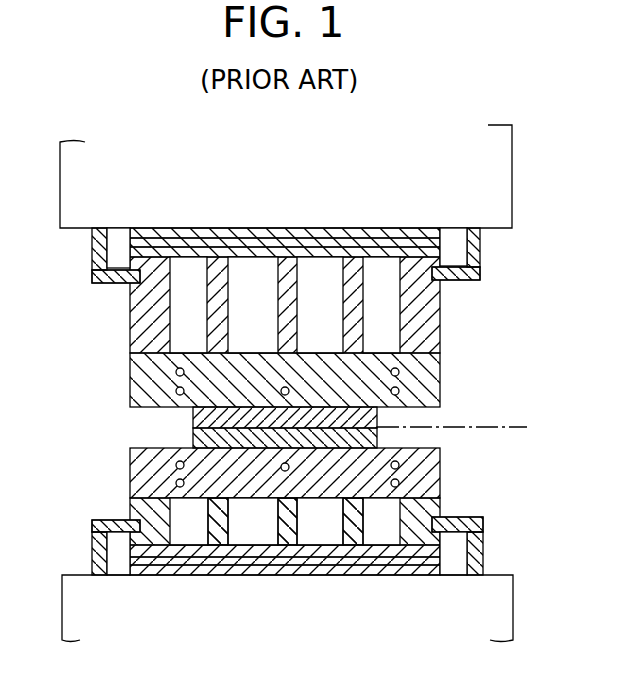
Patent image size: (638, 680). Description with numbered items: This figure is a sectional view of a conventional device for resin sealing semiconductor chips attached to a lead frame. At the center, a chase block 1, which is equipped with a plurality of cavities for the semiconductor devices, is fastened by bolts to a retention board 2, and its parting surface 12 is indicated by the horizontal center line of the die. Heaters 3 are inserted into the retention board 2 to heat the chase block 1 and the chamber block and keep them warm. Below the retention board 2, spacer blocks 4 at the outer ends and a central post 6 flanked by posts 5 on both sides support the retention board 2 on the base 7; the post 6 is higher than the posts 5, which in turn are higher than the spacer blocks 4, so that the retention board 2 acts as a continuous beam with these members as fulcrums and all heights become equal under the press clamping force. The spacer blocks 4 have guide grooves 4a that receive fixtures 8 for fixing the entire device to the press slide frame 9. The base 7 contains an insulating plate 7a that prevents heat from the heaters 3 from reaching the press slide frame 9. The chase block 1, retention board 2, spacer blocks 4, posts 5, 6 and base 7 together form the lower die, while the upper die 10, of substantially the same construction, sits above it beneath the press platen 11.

The chase block 1 is at (207, 440).
The retention board 2 is at (143, 472).
The heaters 3 is at (399, 466).
The spacer blocks 4 is at (140, 505).
The guide grooves 4a is at (155, 538).
The posts 5 is at (205, 528).
The post 6 is at (276, 528).
The base 7 is at (285, 581).
The insulating plate 7a is at (427, 558).
The fixtures 8 is at (92, 553).
The press slide frame 9 is at (488, 614).
The upper die 10 is at (426, 381).
The press platen 11 is at (493, 184).
The parting surface 12 is at (493, 427).